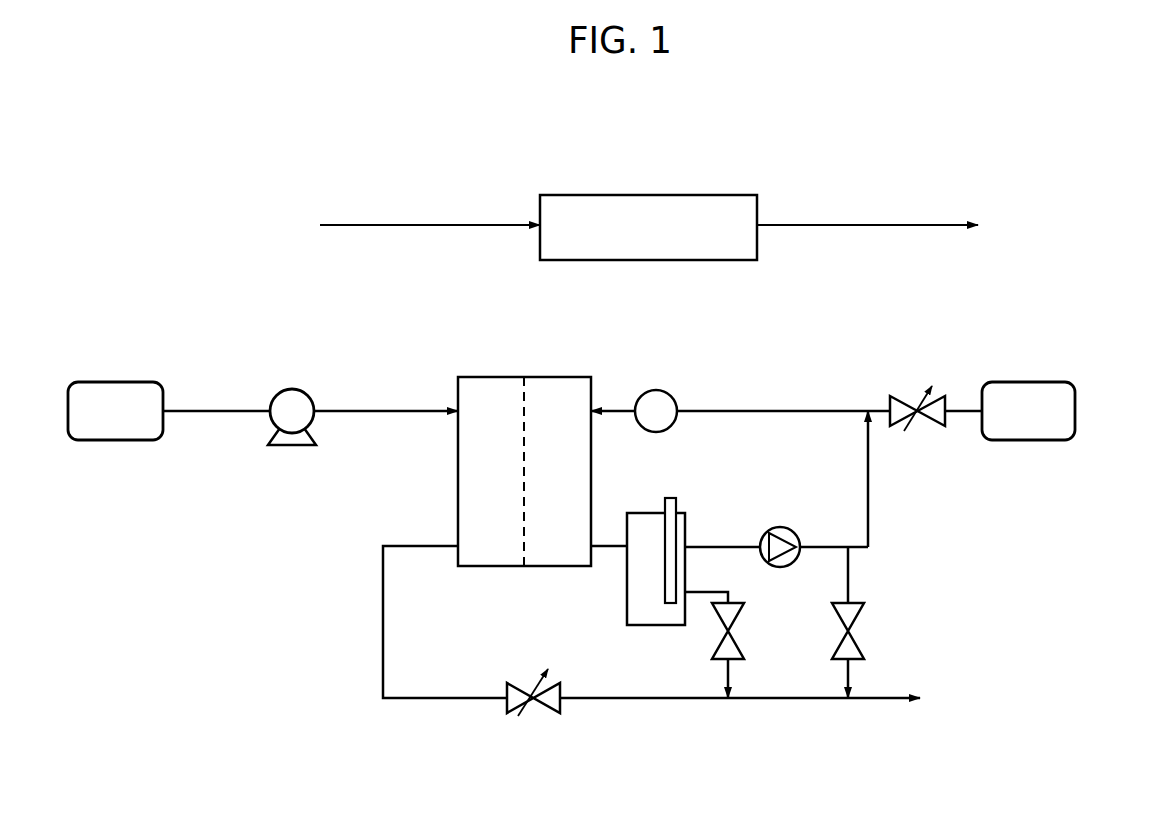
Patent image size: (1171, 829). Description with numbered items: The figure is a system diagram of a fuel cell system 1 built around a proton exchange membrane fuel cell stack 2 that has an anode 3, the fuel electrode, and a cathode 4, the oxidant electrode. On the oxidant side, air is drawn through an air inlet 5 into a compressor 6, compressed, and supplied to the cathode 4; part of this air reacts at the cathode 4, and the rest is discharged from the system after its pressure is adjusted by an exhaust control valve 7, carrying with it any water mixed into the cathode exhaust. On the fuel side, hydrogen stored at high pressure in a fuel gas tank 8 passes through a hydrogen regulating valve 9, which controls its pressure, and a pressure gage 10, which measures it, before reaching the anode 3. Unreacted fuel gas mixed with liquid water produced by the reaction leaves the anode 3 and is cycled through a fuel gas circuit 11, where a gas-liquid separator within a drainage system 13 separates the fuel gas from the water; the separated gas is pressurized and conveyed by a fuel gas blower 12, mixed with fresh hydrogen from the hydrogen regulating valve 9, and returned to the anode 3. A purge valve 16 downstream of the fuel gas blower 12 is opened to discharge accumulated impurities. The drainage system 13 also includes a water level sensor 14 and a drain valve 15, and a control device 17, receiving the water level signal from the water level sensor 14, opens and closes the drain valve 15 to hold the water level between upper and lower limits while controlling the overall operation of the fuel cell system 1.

The fuel cell system 1 is at (551, 108).
The proton exchange membrane fuel cell stack 2 is at (524, 428).
The anode 3 is at (591, 490).
The cathode 4 is at (458, 488).
The air inlet 5 is at (115, 440).
The compressor 6 is at (291, 388).
The exhaust control valve 7 is at (505, 684).
The fuel gas tank 8 is at (1005, 383).
The hydrogen regulating valve 9 is at (900, 398).
The pressure gage 10 is at (672, 395).
The fuel gas circuit 11 is at (870, 513).
The fuel gas blower 12 is at (775, 527).
The drainage system 13 is at (643, 625).
The water level sensor 14 is at (668, 603).
The drain valve 15 is at (735, 640).
The purge valve 16 is at (860, 635).
The control device 17 is at (713, 195).